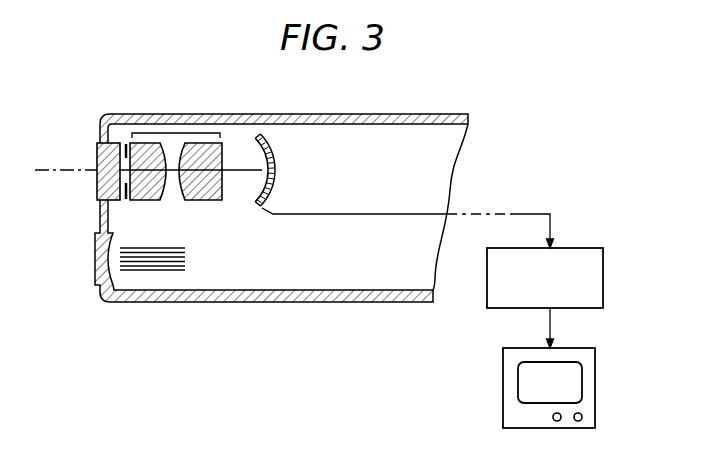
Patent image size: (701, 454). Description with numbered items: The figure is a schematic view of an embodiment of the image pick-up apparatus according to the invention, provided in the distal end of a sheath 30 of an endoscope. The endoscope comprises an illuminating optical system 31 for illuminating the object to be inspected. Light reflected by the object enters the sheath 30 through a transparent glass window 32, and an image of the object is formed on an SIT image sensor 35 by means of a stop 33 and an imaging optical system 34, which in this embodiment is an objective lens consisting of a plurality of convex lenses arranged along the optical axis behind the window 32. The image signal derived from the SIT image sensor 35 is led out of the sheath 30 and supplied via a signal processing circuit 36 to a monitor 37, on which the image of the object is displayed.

The sheath 30 is at (227, 302).
The illuminating optical system 31 is at (143, 283).
The transparent glass window 32 is at (96, 150).
The stop 33 is at (126, 144).
The imaging optical system 34 is at (172, 134).
The SIT image sensor 35 is at (267, 138).
The signal processing circuit 36 is at (603, 272).
The monitor 37 is at (597, 370).